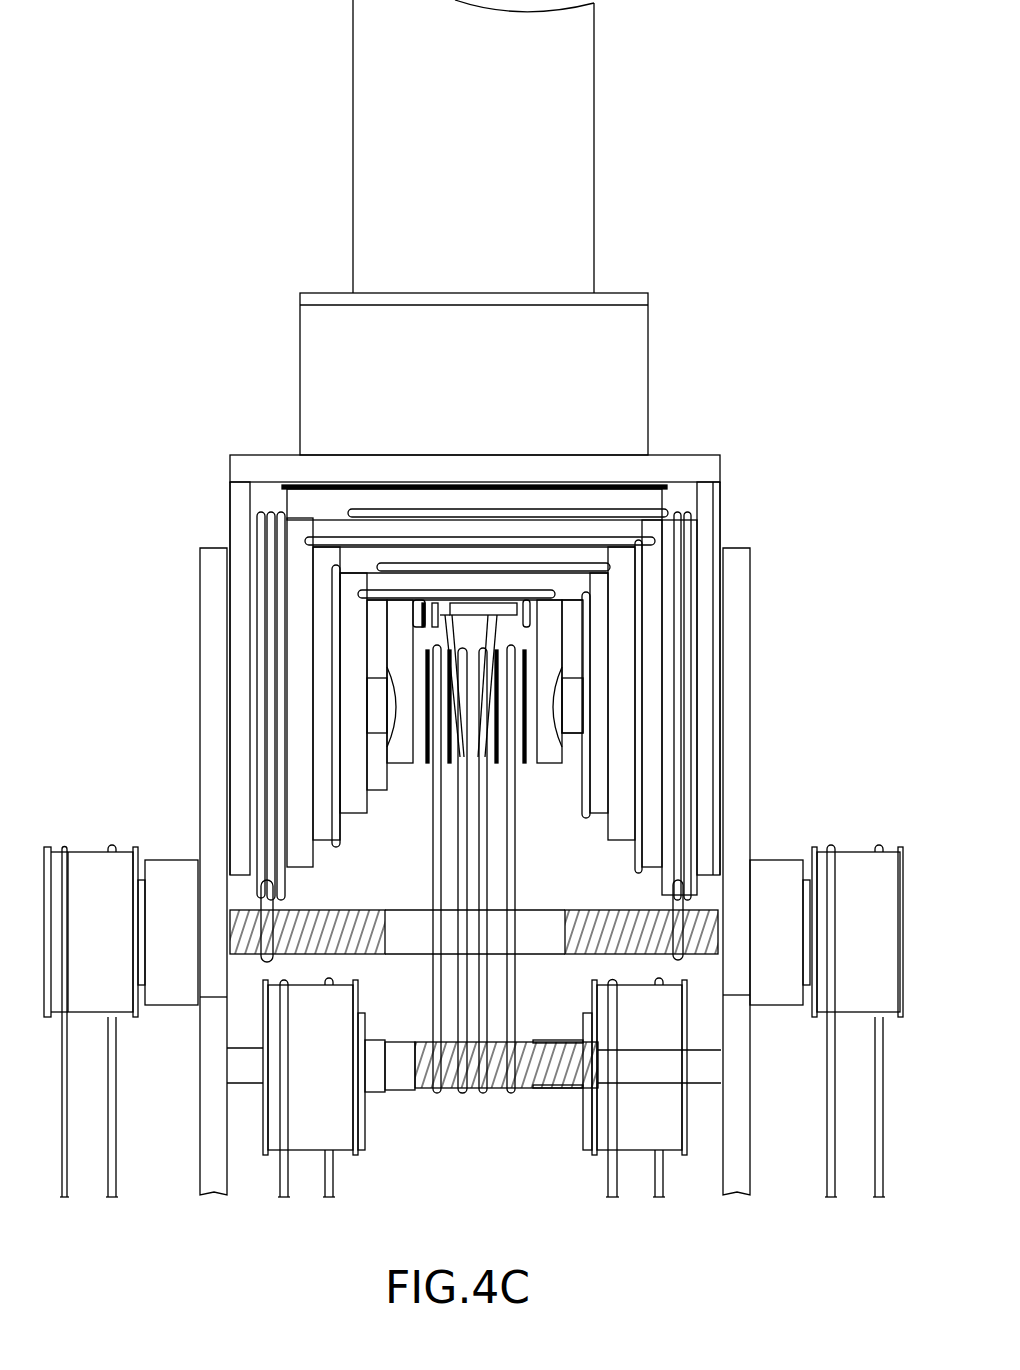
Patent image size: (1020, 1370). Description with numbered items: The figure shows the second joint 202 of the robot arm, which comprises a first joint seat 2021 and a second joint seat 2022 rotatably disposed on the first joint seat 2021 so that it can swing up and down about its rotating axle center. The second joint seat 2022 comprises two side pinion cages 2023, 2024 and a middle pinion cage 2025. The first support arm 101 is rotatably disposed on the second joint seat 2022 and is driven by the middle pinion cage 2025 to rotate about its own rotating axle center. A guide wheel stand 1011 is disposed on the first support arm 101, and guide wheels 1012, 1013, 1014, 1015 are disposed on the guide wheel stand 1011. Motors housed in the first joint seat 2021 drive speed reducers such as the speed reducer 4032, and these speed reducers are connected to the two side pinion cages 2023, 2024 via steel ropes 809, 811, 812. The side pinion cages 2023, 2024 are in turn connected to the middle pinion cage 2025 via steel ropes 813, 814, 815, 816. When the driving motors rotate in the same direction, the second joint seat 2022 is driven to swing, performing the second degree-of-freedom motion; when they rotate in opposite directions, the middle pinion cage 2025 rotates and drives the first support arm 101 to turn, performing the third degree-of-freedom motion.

The first support arm 101 is at (595, 147).
The second joint 202 is at (738, 437).
The first joint seat 2021 is at (750, 627).
The second joint seat 2022 is at (720, 507).
The side pinion cage 2023 is at (300, 622).
The side pinion cage 2024 is at (620, 680).
The middle pinion cage 2025 is at (307, 503).
The guide wheel stand 1011 is at (553, 633).
The guide wheel 1012 is at (423, 770).
The guide wheel 1013 is at (453, 775).
The guide wheel 1014 is at (493, 775).
The guide wheel 1015 is at (525, 770).
The steel rope 809 is at (258, 835).
The steel rope 811 is at (677, 845).
The steel rope 812 is at (685, 782).
The steel rope 813 is at (268, 768).
The steel rope 814 is at (335, 677).
The steel rope 815 is at (585, 732).
The steel rope 816 is at (282, 735).
The speed reducer 4032 is at (128, 1010).